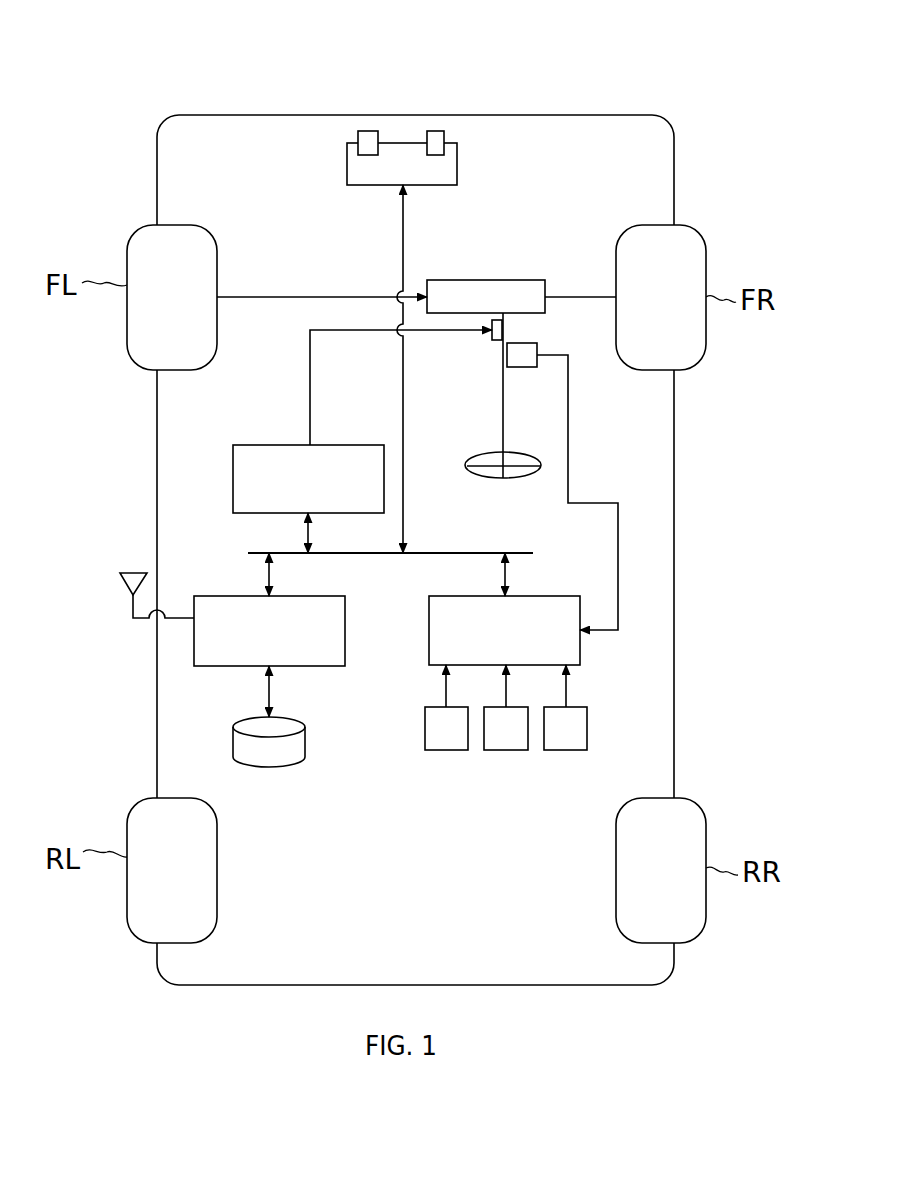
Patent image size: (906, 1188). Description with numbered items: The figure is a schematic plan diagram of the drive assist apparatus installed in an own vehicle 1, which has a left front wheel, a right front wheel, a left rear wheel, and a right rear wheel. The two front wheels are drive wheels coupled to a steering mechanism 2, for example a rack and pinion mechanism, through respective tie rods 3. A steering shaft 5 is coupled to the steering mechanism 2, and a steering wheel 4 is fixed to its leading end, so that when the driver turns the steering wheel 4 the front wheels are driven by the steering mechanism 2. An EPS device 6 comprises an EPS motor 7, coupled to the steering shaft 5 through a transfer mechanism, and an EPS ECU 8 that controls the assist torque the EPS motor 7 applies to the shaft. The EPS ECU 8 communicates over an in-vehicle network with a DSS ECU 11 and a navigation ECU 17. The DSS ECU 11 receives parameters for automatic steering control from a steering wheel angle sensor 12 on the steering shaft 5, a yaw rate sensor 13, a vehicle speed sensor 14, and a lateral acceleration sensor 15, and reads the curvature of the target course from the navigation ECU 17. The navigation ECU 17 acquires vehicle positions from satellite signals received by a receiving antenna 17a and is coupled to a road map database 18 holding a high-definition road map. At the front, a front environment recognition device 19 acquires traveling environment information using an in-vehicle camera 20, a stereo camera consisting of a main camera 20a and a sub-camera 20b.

The own vehicle 1 is at (580, 92).
The steering mechanism 2 is at (488, 280).
The tie rods 3 is at (286, 297).
The steering wheel 4 is at (508, 480).
The steering shaft 5 is at (500, 400).
The EPS device 6 is at (280, 385).
The EPS motor 7 is at (490, 337).
The EPS ECU 8 is at (274, 445).
The DSS ECU 11 is at (565, 596).
The steering wheel angle sensor 12 is at (520, 343).
The yaw rate sensor 13 is at (446, 753).
The vehicle speed sensor 14 is at (504, 753).
The lateral acceleration sensor 15 is at (563, 753).
The navigation ECU 17 is at (345, 628).
The receiving antenna 17a is at (120, 586).
The road map database 18 is at (269, 768).
The front environment recognition device 19 is at (347, 164).
The in-vehicle camera 20 is at (398, 83).
The main camera 20a is at (433, 102).
The sub-camera 20b is at (369, 131).